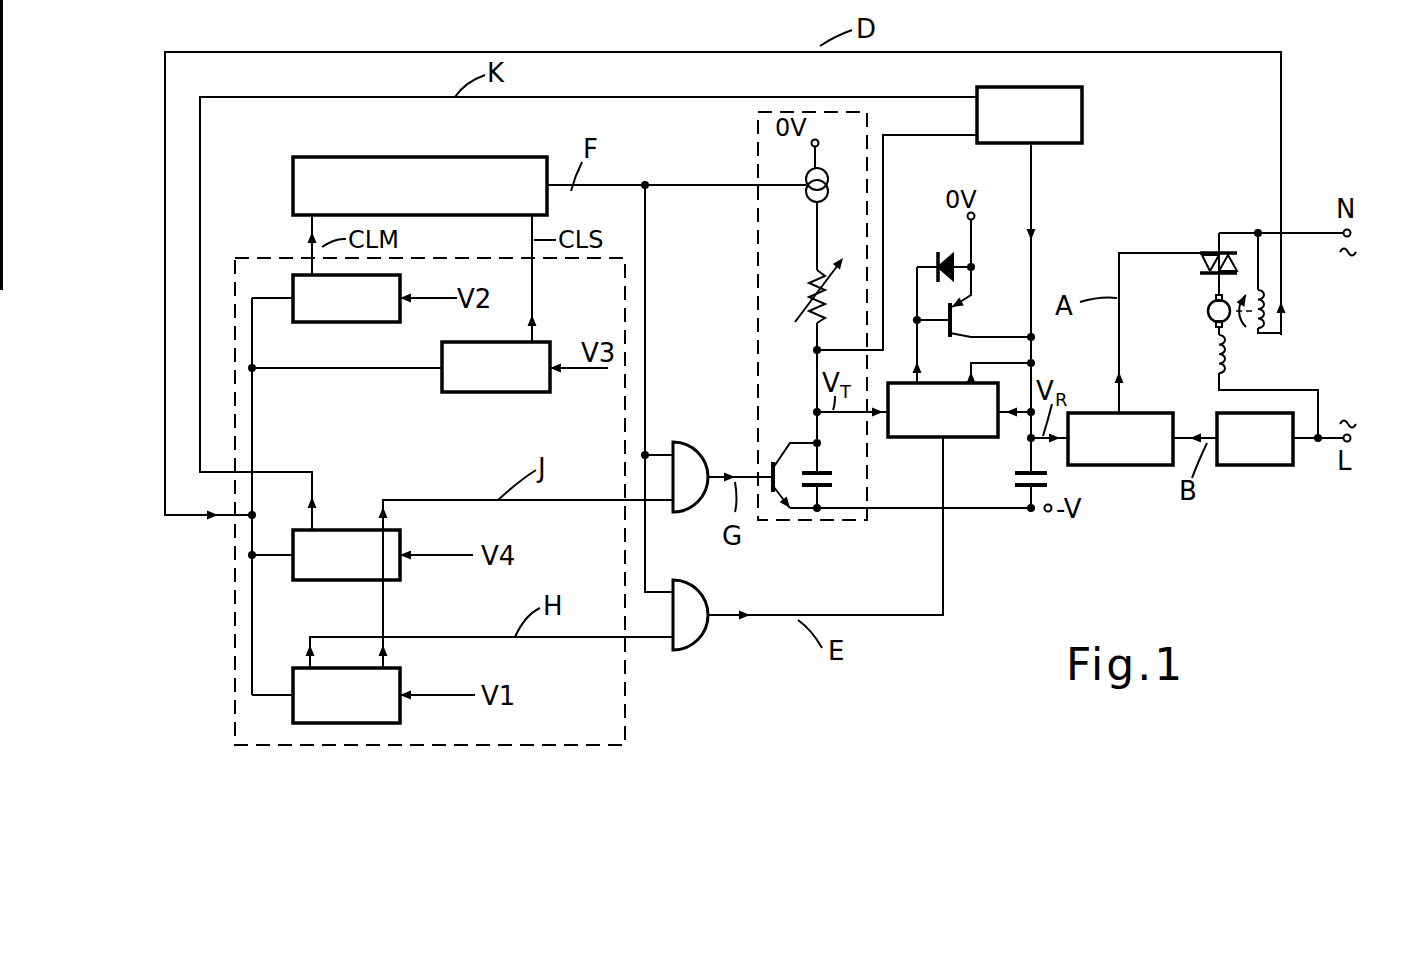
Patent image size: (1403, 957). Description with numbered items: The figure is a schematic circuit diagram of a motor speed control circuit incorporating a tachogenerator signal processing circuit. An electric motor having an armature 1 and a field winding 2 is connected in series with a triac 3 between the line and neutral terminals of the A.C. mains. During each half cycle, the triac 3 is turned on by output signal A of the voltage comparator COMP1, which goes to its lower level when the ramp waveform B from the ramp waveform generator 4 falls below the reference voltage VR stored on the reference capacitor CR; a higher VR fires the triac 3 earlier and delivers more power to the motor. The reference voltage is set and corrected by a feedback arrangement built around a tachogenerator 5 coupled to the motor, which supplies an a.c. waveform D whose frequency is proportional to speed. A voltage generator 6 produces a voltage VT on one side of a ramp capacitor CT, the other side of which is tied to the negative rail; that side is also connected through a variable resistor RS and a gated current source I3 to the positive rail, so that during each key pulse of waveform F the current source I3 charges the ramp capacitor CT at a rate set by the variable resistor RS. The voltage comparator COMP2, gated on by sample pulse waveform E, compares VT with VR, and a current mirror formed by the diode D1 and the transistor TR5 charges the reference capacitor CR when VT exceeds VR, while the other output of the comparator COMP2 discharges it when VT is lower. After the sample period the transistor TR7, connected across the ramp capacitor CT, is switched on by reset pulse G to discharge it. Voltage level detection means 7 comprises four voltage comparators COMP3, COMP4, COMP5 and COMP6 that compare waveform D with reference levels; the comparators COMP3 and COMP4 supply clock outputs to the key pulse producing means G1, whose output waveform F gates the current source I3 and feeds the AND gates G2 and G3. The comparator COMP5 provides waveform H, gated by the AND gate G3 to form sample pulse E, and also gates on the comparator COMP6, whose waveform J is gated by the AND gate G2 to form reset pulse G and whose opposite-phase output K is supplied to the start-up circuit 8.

The armature 1 is at (1206, 309).
The field winding 2 is at (1213, 353).
The triac 3 is at (1204, 255).
The ramp waveform generator 4 is at (1255, 445).
The tachogenerator 5 is at (1266, 321).
The voltage generator 6 is at (832, 522).
The voltage level detection means 7 is at (628, 710).
The start-up circuit 8 is at (1082, 115).
The key pulse producing means G1 is at (362, 181).
The AND gate G2 is at (688, 457).
The AND gate G3 is at (687, 593).
The voltage comparator COMP1 is at (1120, 439).
The voltage comparator COMP2 is at (943, 410).
The voltage comparator COMP3 is at (346, 298).
The voltage comparator COMP4 is at (496, 367).
The voltage comparator COMP5 is at (346, 695).
The voltage comparator COMP6 is at (346, 555).
The gated current source I3 is at (805, 183).
The variable resistor RS is at (803, 284).
The transistor TR7 is at (782, 460).
The transistor TR5 is at (963, 323).
The diode D1 is at (945, 253).
The ramp capacitor CT is at (834, 478).
The reference capacitor CR is at (1012, 477).